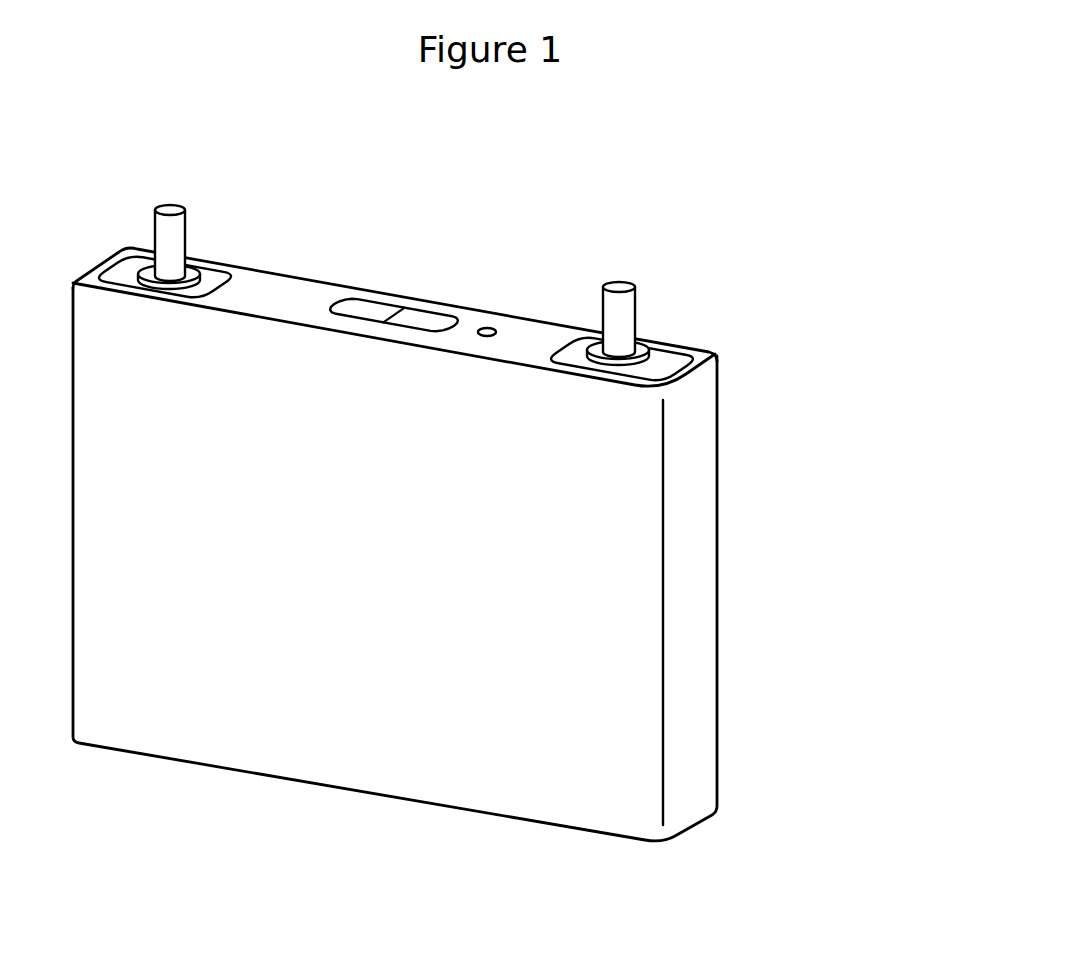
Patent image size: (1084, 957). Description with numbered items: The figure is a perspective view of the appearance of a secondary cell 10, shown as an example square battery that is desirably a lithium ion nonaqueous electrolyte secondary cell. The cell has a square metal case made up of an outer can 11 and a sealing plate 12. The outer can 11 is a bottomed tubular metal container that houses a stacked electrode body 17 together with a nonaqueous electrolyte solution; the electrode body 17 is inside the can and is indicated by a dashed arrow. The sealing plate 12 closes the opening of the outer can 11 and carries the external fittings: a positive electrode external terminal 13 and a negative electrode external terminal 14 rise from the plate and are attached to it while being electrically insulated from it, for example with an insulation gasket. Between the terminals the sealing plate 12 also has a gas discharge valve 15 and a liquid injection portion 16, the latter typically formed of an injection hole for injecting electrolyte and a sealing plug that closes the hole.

The secondary cell 10 is at (500, 498).
The outer can 11 is at (702, 645).
The sealing plate 12 is at (323, 287).
The positive electrode external terminal 13 is at (173, 210).
The negative electrode external terminal 14 is at (622, 287).
The gas discharge valve 15 is at (422, 322).
The liquid injection portion 16 is at (490, 327).
The electrode body 17 is at (545, 508).